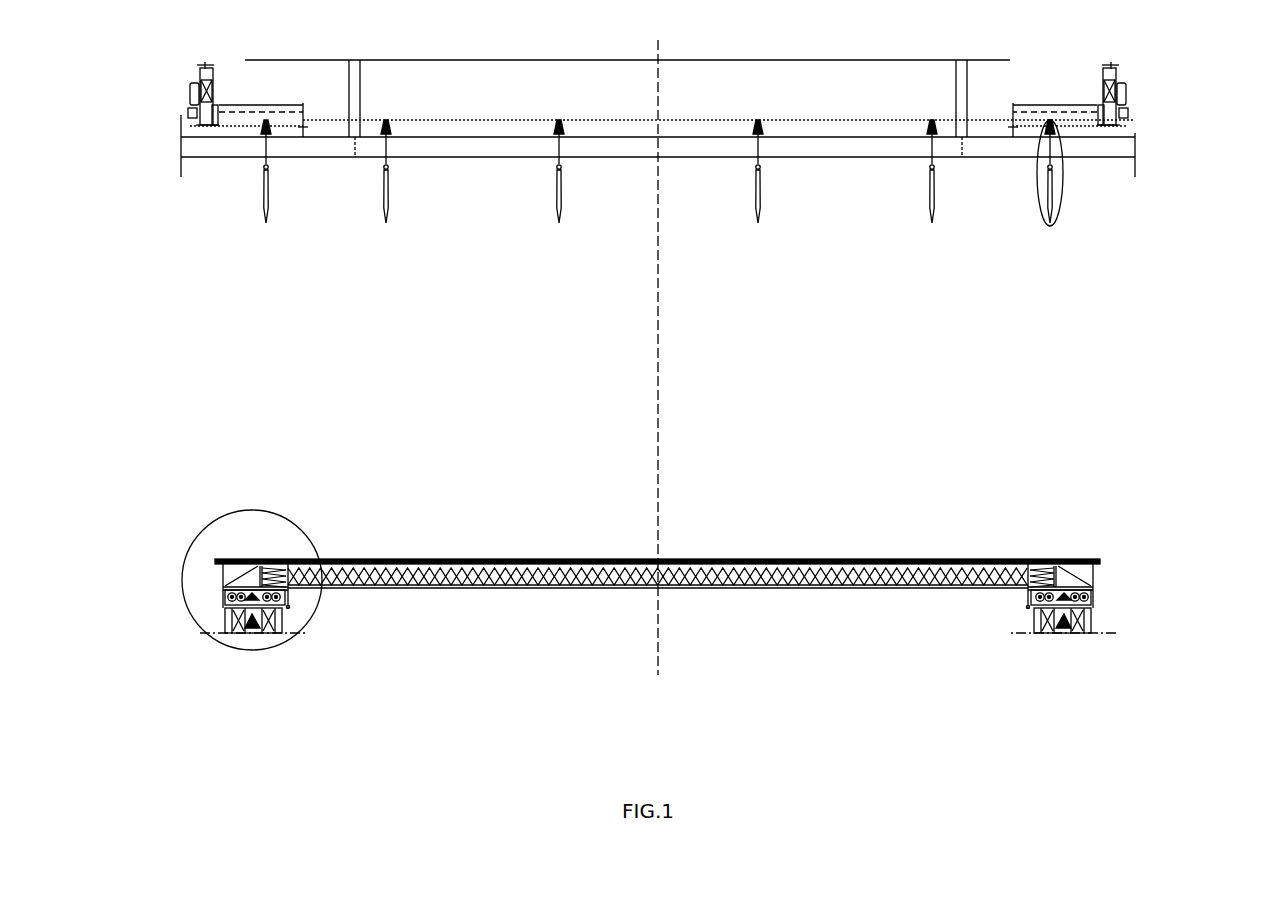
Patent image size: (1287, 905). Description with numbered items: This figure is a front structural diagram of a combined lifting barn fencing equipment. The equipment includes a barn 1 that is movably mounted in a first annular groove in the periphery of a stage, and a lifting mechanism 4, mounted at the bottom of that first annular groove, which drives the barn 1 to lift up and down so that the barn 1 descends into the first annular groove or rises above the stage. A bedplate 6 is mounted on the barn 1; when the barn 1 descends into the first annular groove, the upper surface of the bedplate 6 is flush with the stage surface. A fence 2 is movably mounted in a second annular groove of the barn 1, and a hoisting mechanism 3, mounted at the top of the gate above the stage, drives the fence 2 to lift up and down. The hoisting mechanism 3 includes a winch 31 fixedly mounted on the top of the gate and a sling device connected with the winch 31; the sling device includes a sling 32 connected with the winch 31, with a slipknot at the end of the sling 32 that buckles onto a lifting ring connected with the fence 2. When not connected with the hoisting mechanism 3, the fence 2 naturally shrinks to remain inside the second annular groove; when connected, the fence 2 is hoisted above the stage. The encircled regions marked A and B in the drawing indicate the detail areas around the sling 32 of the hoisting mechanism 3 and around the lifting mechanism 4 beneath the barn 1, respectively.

The barn 1 is at (1100, 580).
The fence 2 is at (1058, 562).
The hoisting mechanism 3 is at (198, 123).
The winch 31 is at (1127, 115).
The sling 32 is at (1050, 140).
The lifting mechanism 4 is at (223, 605).
The bedplate 6 is at (233, 561).
The detail view A is at (1058, 213).
The detail view B is at (230, 648).